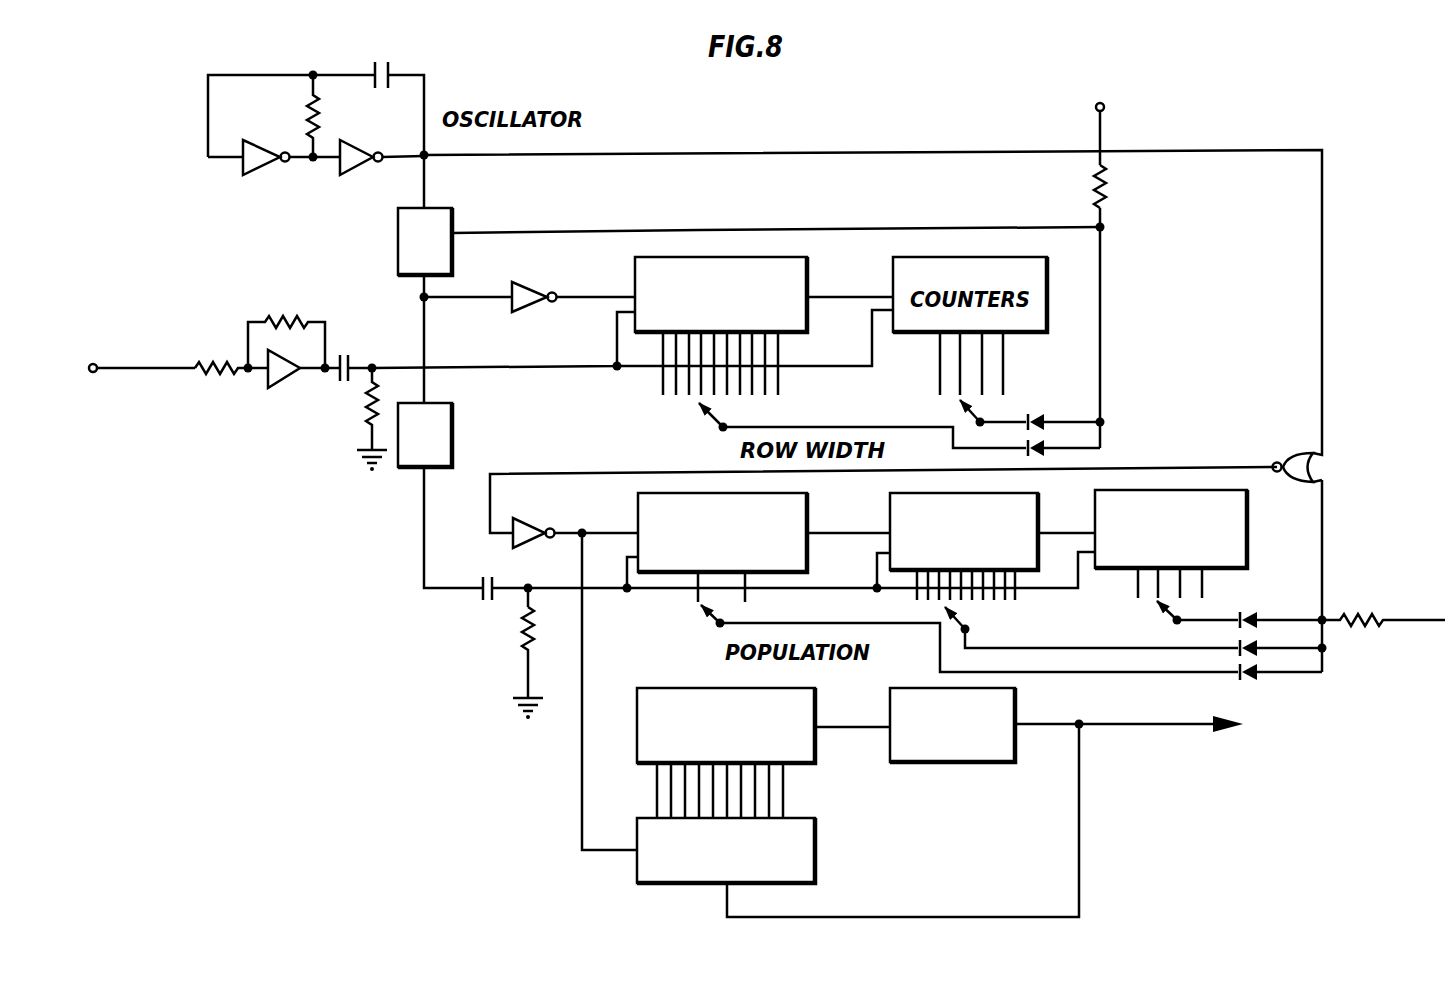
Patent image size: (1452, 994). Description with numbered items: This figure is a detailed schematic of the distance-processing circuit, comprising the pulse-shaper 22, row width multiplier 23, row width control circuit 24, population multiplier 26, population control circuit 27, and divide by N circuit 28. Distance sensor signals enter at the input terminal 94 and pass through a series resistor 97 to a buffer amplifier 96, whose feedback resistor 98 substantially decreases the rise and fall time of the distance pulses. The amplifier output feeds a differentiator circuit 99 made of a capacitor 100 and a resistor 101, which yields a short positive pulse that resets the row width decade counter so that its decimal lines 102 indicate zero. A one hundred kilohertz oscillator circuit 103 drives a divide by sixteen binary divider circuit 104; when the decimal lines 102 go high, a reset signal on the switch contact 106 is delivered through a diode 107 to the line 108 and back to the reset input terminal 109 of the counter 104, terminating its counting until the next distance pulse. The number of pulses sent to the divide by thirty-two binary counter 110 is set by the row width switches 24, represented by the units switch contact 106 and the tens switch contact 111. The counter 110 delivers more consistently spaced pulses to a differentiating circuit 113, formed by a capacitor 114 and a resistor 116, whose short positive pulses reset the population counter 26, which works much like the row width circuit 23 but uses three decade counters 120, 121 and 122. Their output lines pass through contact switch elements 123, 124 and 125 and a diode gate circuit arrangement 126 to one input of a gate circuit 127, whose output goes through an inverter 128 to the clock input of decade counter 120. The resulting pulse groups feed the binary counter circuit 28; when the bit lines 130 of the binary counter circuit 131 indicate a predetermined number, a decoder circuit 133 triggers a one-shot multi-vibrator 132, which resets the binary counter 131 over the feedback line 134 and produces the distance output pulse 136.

The pulse-shaper 22 is at (258, 364).
The row width multiplier 23 is at (703, 218).
The row width control circuit 24 is at (803, 433).
The population multiplier 26 is at (939, 549).
The population control circuit 27 is at (690, 605).
The divide by N circuit 28 is at (695, 708).
The input terminal 94 is at (93, 363).
The buffer amplifier 96 is at (270, 380).
The series resistor 97 is at (206, 373).
The feedback resistor 98 is at (298, 320).
The differentiator circuit 99 is at (357, 372).
The capacitor 100 is at (345, 355).
The resistor 101 is at (366, 400).
The decimal lines 102 is at (661, 376).
The oscillator circuit 103 is at (343, 184).
The divide by 16 binary divider circuit 104 is at (450, 208).
The switch contact 106 is at (705, 428).
The diode 107 is at (1046, 449).
The line 108 is at (897, 230).
The reset input terminal 109 is at (497, 232).
The divide by 32 binary counter 110 is at (403, 463).
The switch contact 111 is at (977, 410).
The differentiating circuit 113 is at (518, 599).
The capacitor 114 is at (483, 581).
The resistor 116 is at (525, 640).
The decade counter 120 is at (691, 549).
The decade counter 121 is at (900, 505).
The decade counter 122 is at (1107, 503).
The contact switch element 123 is at (705, 622).
The contact switch element 124 is at (945, 627).
The contact switch element 125 is at (1162, 612).
The diode gate circuit arrangement 126 is at (1248, 682).
The gate circuit 127 is at (1292, 452).
The inverter 128 is at (530, 521).
The bit lines 130 is at (656, 797).
The binary counter circuit 131 is at (800, 840).
The one-shot multi-vibrator 132 is at (985, 763).
The decoder circuit 133 is at (648, 697).
The feedback line 134 is at (1082, 834).
The distance signal output 136 is at (1186, 728).